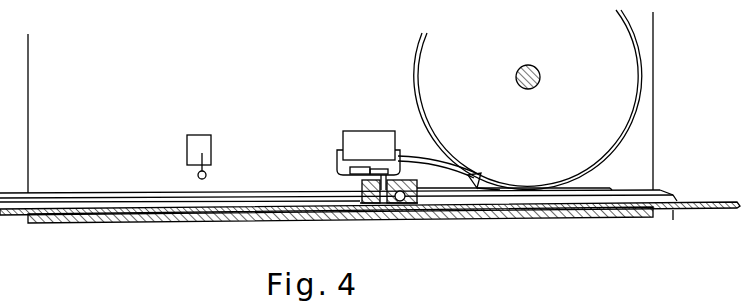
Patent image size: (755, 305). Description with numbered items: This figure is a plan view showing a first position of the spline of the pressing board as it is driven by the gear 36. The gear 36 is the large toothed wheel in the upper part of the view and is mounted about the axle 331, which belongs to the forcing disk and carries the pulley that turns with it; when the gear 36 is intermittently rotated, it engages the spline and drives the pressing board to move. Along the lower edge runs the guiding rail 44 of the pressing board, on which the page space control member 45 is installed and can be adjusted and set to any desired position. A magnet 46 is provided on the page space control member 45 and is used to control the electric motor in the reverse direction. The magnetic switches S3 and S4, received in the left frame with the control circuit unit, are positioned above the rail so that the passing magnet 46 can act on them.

The gear 36 is at (413, 73).
The axle 331 is at (516, 72).
The guiding rail 44 is at (674, 198).
The page space control member 45 is at (418, 170).
The magnet 46 is at (363, 185).
The magnetic switch S3 is at (206, 171).
The magnetic switch S4 is at (360, 158).